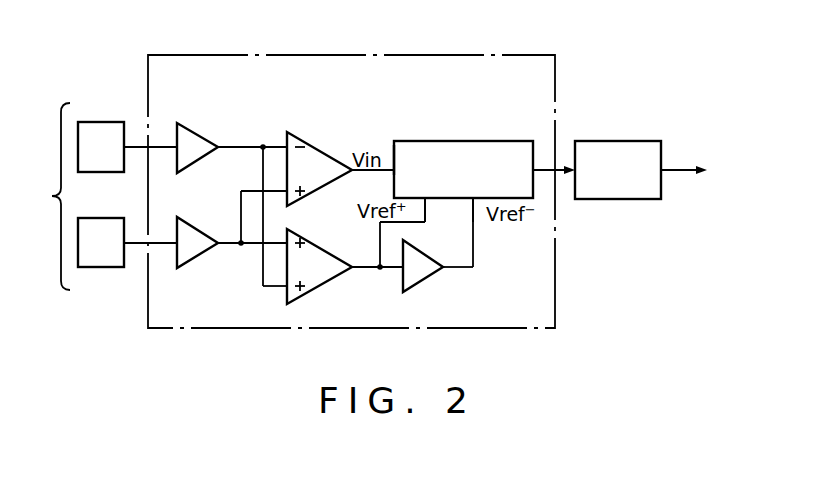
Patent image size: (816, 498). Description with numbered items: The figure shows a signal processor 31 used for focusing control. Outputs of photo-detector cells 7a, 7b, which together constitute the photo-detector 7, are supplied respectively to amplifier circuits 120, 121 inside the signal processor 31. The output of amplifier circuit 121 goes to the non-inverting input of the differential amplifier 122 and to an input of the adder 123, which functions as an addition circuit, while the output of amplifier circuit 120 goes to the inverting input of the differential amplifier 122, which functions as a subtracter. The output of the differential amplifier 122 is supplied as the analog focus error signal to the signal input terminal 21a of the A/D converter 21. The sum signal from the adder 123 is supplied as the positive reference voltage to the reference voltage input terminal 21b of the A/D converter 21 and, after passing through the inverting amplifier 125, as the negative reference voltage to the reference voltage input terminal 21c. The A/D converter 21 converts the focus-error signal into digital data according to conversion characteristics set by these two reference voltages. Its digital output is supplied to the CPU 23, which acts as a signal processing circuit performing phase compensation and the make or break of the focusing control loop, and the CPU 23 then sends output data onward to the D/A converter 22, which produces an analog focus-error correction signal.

The photo-detector 7 is at (51, 196).
The photo-detector cell 7a is at (104, 122).
The photo-detector cell 7b is at (101, 267).
The signal processor 31 is at (457, 55).
The amplifier circuit 120 is at (203, 135).
The amplifier circuit 121 is at (205, 229).
The differential amplifier 122 is at (315, 152).
The adder 123 is at (323, 277).
The inverting amplifier 125 is at (437, 272).
The A/D converter 21 is at (487, 141).
The signal input terminal 21a is at (394, 141).
The reference voltage input terminal 21b is at (425, 206).
The reference voltage input terminal 21c is at (474, 210).
The central processing unit 23 is at (624, 141).
The D/A converter 22 is at (733, 173).